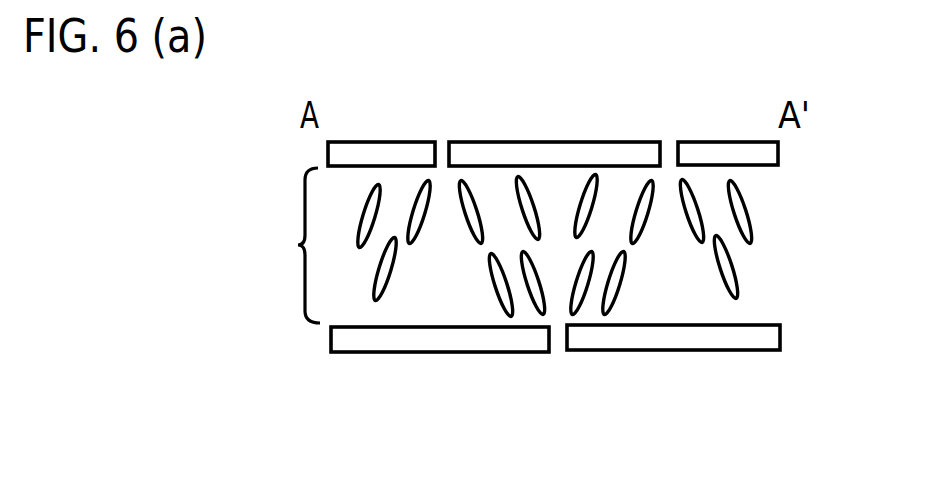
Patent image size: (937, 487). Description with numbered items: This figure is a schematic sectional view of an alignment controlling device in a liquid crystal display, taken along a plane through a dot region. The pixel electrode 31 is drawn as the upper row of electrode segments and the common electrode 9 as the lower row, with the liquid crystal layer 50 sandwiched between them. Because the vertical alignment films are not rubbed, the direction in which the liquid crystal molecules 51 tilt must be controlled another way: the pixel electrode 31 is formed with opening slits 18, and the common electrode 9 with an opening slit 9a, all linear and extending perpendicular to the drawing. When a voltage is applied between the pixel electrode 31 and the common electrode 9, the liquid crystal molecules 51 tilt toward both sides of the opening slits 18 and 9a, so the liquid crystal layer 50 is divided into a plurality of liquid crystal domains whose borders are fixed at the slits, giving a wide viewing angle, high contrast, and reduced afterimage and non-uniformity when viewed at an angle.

The pixel electrode 31 is at (768, 152).
The opening slit 18 is at (444, 118).
The liquid crystal layer 50 is at (287, 245).
The liquid crystal molecules 51 is at (745, 207).
The common electrode 9 is at (768, 340).
The opening slit 9a is at (573, 368).